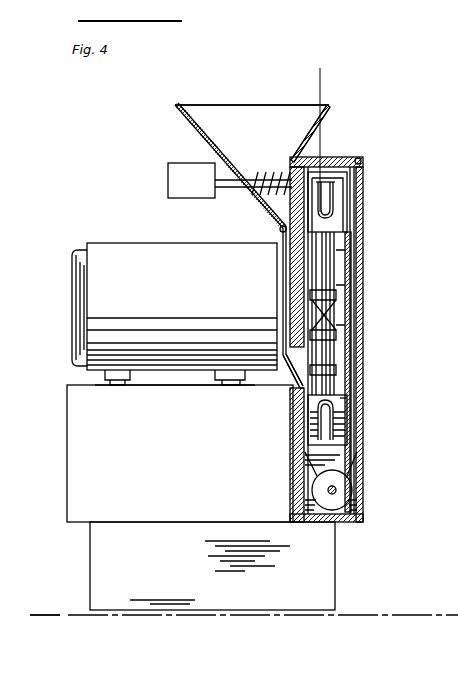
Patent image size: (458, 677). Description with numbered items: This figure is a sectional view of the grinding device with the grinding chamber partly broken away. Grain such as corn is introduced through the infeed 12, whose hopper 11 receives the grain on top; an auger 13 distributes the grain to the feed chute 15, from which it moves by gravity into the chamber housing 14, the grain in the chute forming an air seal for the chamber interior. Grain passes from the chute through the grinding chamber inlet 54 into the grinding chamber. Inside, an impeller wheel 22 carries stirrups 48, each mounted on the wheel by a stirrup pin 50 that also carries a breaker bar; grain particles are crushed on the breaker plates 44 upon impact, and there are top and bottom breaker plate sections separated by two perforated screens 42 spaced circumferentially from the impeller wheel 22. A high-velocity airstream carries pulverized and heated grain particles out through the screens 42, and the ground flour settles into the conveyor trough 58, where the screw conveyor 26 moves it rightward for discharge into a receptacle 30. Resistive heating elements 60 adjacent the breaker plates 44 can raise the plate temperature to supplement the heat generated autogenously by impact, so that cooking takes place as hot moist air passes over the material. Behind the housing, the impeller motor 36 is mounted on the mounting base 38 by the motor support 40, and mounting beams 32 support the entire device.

The hopper 11 is at (220, 104).
The infeed 12 is at (199, 95).
The auger 13 is at (272, 192).
The chamber housing 14 is at (305, 158).
The feed chute 15 is at (279, 228).
The impeller wheel 22 is at (338, 286).
The screw conveyor 26 is at (334, 488).
The receptacle 30 is at (30, 594).
The mounting beams 32 is at (103, 575).
The impeller motor 36 is at (86, 290).
The mounting base 38 is at (77, 480).
The motor support 40 is at (120, 365).
The screens 42 is at (351, 305).
The breaker plates 44 is at (340, 213).
The stirrup 48 is at (320, 236).
The stirrup pin 50 is at (336, 258).
The grinding chamber inlet 54 is at (262, 393).
The conveyor trough 58 is at (357, 490).
The resistive heating elements 60 is at (340, 400).